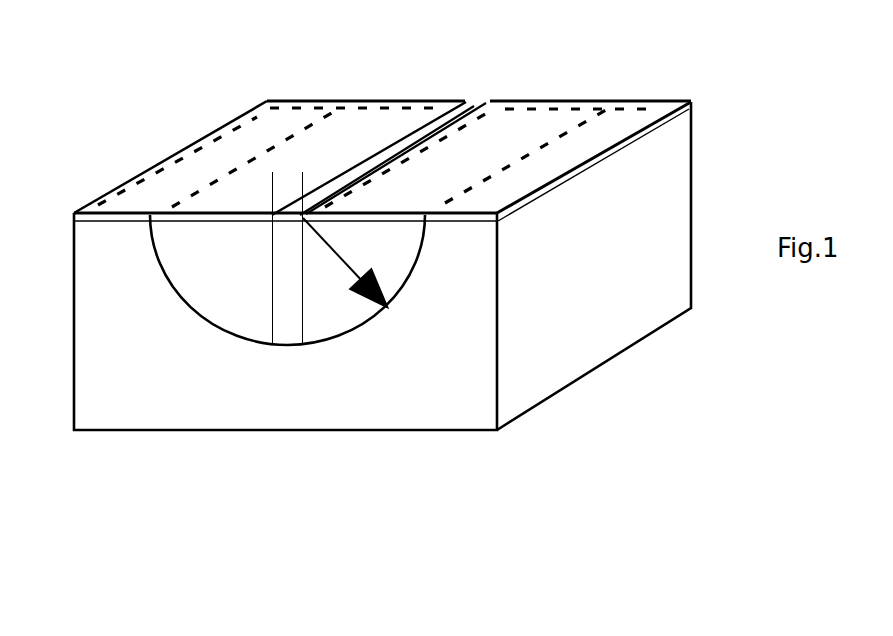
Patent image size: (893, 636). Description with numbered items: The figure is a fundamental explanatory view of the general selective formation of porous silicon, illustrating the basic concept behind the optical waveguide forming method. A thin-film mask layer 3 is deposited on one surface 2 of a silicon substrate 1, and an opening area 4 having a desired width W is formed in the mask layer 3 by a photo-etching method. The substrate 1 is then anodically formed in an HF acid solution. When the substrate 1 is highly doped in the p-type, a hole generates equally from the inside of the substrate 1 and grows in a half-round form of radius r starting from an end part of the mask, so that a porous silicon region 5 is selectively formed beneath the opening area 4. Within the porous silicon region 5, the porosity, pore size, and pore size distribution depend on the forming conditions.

The silicon substrate 1 is at (643, 307).
The surface 2 is at (693, 107).
The mask layer 3 is at (642, 102).
The opening area 4 is at (473, 103).
The porous silicon region 5 is at (170, 258).